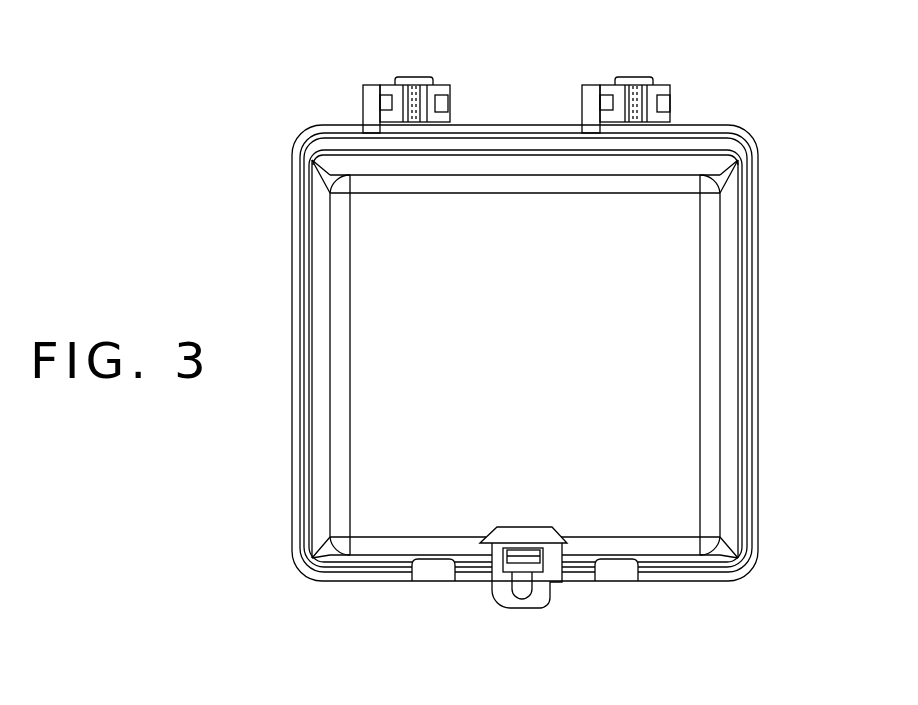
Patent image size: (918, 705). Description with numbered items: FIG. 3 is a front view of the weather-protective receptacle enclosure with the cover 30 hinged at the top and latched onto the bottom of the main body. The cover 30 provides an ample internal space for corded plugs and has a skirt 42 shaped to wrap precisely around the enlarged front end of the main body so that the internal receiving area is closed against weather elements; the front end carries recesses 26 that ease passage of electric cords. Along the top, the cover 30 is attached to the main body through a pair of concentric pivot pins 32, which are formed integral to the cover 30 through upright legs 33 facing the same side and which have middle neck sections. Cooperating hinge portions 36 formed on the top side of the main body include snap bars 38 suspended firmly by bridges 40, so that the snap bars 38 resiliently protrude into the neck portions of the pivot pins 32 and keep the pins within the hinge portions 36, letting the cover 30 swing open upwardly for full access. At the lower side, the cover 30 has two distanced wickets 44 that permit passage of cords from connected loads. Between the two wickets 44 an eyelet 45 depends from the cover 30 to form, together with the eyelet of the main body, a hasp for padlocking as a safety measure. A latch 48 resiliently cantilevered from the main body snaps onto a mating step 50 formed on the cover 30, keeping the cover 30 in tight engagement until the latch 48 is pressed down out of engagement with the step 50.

The recesses 26 is at (443, 563).
The cover 30 is at (511, 358).
The pivot pins 32 is at (451, 102).
The upright legs 33 is at (364, 93).
The hinge portions 36 is at (440, 85).
The snap bars 38 is at (634, 105).
The bridges 40 is at (405, 77).
The skirt 42 is at (759, 268).
The wickets 44 is at (422, 562).
The eyelet 45 is at (537, 598).
The latch 48 is at (523, 548).
The mating step 50 is at (500, 548).